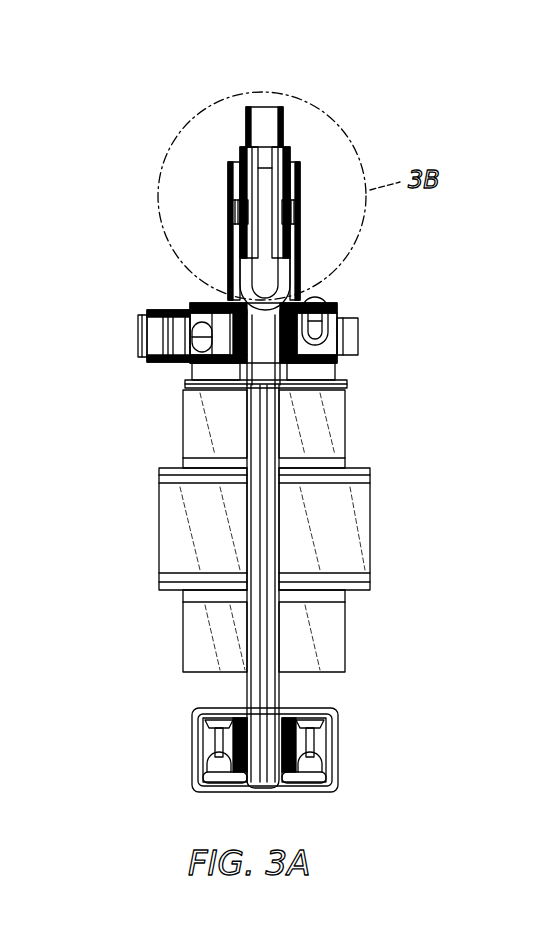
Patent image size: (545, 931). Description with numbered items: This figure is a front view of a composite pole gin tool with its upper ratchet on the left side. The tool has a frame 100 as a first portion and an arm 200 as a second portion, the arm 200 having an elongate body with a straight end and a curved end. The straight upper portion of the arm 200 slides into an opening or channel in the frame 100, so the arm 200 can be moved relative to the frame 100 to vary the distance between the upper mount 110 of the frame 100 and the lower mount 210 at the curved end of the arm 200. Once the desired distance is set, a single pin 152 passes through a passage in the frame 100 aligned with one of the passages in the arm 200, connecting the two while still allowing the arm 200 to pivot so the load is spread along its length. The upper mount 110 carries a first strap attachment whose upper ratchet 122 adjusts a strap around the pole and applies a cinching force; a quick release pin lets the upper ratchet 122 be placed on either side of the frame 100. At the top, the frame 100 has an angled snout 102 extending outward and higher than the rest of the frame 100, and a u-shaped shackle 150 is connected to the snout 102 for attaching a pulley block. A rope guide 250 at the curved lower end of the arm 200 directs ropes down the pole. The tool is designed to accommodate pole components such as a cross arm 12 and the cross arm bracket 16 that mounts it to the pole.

The snout 102 is at (265, 112).
The shackle 150 is at (287, 243).
The upper mount 110 is at (202, 300).
The upper ratchet 122 is at (153, 335).
The pin 152 is at (333, 310).
The frame 100 is at (337, 362).
The cross arm 12 is at (338, 503).
The cross arm bracket 16 is at (330, 623).
The arm 200 is at (260, 692).
The lower mount 210 is at (318, 763).
The rope guide 250 is at (207, 742).